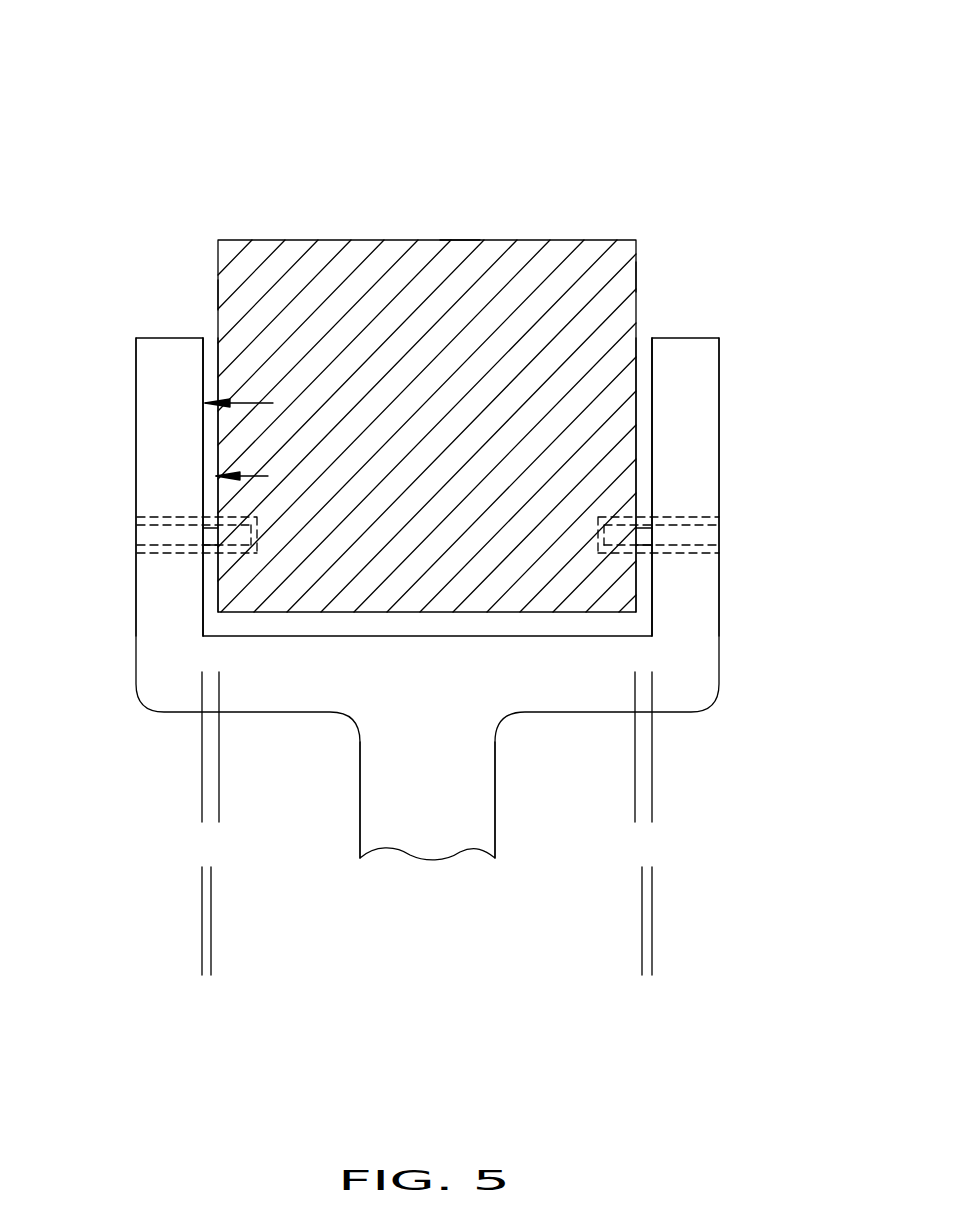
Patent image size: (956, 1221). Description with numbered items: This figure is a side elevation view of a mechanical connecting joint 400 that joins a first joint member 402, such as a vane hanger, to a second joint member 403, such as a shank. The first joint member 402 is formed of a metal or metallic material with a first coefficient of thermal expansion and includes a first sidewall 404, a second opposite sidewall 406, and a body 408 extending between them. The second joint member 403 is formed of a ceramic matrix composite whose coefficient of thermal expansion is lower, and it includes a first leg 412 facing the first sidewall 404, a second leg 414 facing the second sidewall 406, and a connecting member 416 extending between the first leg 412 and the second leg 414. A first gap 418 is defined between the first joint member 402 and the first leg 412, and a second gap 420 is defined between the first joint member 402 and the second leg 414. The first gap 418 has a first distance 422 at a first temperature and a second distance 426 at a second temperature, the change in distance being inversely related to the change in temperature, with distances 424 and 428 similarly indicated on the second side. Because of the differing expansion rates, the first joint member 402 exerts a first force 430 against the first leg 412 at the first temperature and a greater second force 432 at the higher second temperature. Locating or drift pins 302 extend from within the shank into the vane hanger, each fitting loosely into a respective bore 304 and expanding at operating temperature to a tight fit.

The mechanical connecting joint 400 is at (218, 103).
The first joint member 402 is at (440, 317).
The second joint member 403 is at (733, 468).
The first sidewall 404 is at (218, 293).
The second opposite sidewall 406 is at (637, 277).
The body 408 is at (462, 250).
The first leg 412 is at (160, 466).
The second leg 414 is at (688, 425).
The connecting member 416 is at (548, 678).
The first gap 418 is at (212, 345).
The second gap 420 is at (643, 352).
The first distance 422 is at (145, 748).
The second wall thickness 424 is at (577, 748).
The second distance 426 is at (145, 942).
The second gap width 428 is at (585, 942).
The first force 430 is at (255, 400).
The second force 432 is at (254, 474).
The locating or drift pins 302 is at (152, 534).
The bore 304 is at (135, 550).